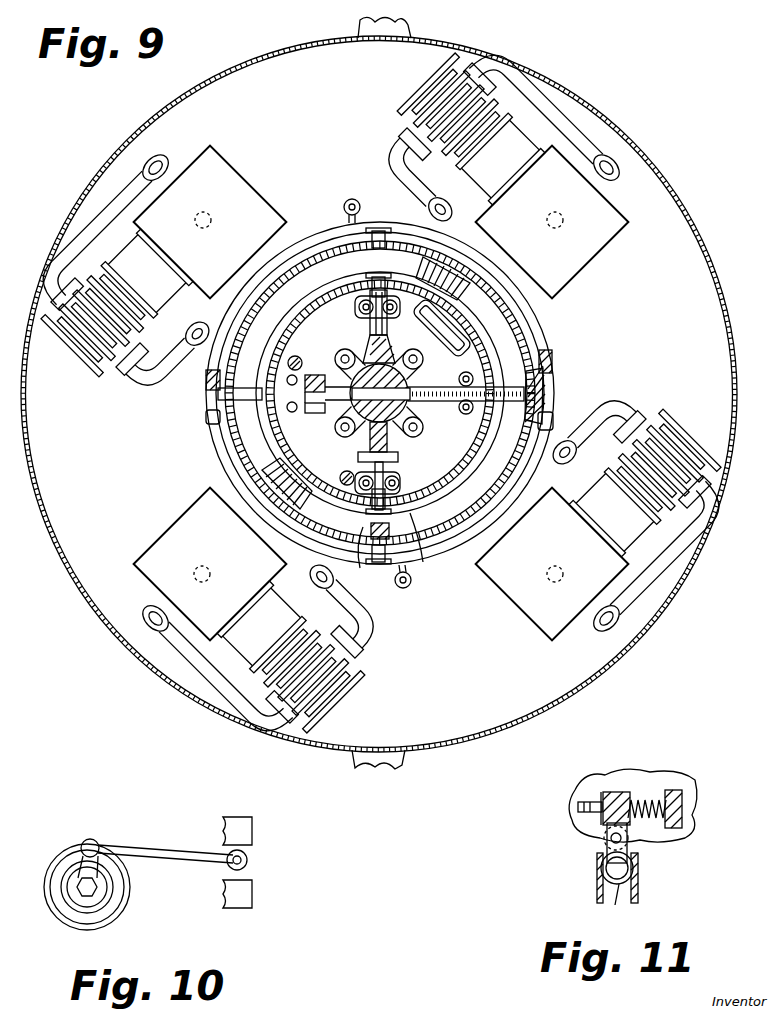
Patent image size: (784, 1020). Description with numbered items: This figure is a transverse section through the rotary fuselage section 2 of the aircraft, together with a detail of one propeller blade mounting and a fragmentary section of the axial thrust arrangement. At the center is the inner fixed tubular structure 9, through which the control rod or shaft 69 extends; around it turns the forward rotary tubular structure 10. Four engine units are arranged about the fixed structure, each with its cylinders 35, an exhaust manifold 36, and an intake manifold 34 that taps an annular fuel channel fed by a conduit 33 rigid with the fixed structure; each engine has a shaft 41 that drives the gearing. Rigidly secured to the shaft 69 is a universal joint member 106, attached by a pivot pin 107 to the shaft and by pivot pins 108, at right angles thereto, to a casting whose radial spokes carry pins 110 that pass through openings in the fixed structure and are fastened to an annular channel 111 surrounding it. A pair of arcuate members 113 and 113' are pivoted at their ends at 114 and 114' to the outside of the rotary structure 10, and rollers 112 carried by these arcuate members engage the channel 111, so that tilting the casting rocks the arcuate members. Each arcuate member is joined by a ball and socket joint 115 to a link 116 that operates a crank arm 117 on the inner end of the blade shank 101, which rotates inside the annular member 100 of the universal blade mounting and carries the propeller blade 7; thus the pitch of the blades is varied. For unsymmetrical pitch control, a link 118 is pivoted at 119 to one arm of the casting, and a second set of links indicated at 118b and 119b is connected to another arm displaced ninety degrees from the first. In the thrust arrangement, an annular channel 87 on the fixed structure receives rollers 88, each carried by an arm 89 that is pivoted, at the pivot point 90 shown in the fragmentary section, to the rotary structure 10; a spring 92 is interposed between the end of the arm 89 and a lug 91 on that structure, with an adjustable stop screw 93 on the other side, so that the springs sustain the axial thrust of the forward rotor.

In FIG. 9, the rotary section 2 is at (727, 297).
In FIG. 9, the propeller blade 7 is at (405, 30).
In FIG. 9, the inner fixed tubular structure 9 is at (272, 361).
In FIG. 9, the forward rotary tubular structure 10 is at (214, 400).
In FIG. 11, the forward rotary tubular structure 10 is at (668, 780).
In FIG. 9, the conduit 33 is at (457, 347).
In FIG. 9, the intake manifold 34 is at (196, 328).
In FIG. 9, the cylinders 35 is at (82, 369).
In FIG. 9, the exhaust manifold 36 is at (568, 123).
In FIG. 9, the engine shaft 41 is at (381, 393).
In FIG. 9, the control rod or shaft 69 is at (392, 400).
In FIG. 11, the annular channel 87 is at (597, 887).
In FIG. 11, the rollers 88 is at (614, 909).
In FIG. 11, the arm 89 is at (633, 848).
In FIG. 11, the pin 90 is at (612, 840).
In FIG. 11, the lug 91 is at (682, 813).
In FIG. 11, the spring 92 is at (643, 797).
In FIG. 11, the adjustable stop screw 93 is at (578, 810).
In FIG. 10, the second annular member 100 is at (113, 913).
In FIG. 10, the propeller blade shank 101 is at (97, 887).
In FIG. 9, the universal joint member 106 is at (358, 360).
In FIG. 9, the pivot pin 107 is at (404, 360).
In FIG. 9, the pivot pins 108 is at (368, 365).
In FIG. 9, the pins 110 is at (503, 387).
In FIG. 9, the annular channel 111 is at (524, 407).
In FIG. 9, the rollers 112 is at (412, 563).
In FIG. 9, the arcuate member 113 is at (361, 393).
In FIG. 10, the arcuate member 113 is at (262, 862).
In FIG. 9, the arcuate member 113' is at (329, 218).
In FIG. 9, the pivot 114 is at (573, 415).
In FIG. 9, the pivot 114' is at (582, 365).
In FIG. 9, the ball and socket joint 115 is at (403, 589).
In FIG. 10, the ball and socket joint 115 is at (247, 857).
In FIG. 10, the link 116 is at (203, 863).
In FIG. 10, the crank arm 117 is at (98, 846).
In FIG. 9, the link 118 is at (350, 468).
In FIG. 9, the control link 118b is at (319, 369).
In FIG. 9, the pivot 119 is at (395, 453).
In FIG. 9, the pivot connection 119b is at (303, 417).